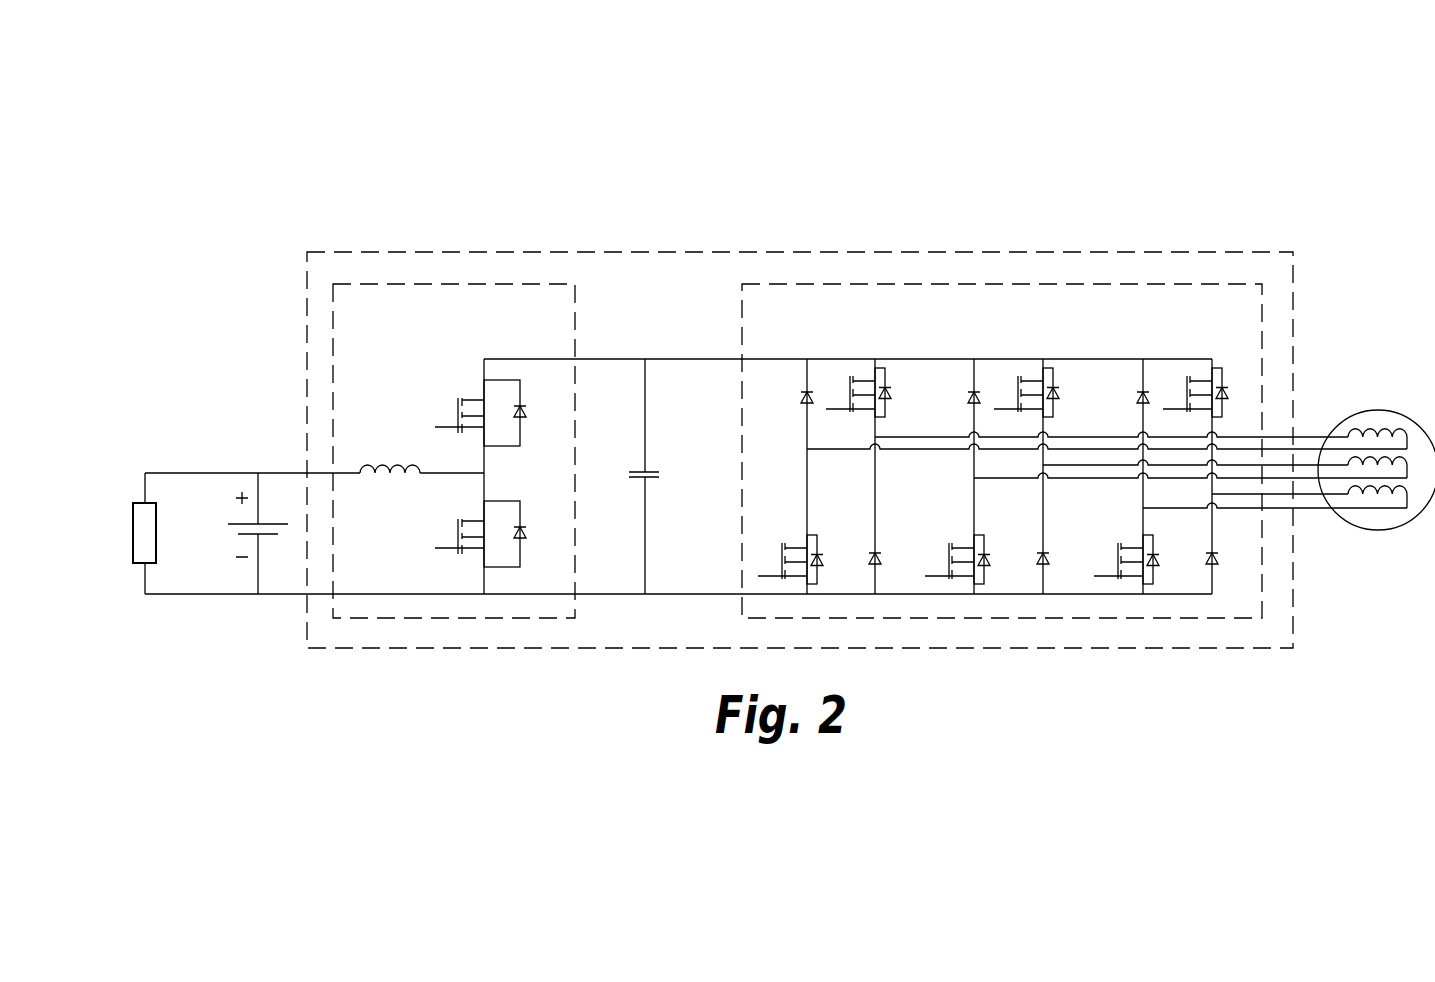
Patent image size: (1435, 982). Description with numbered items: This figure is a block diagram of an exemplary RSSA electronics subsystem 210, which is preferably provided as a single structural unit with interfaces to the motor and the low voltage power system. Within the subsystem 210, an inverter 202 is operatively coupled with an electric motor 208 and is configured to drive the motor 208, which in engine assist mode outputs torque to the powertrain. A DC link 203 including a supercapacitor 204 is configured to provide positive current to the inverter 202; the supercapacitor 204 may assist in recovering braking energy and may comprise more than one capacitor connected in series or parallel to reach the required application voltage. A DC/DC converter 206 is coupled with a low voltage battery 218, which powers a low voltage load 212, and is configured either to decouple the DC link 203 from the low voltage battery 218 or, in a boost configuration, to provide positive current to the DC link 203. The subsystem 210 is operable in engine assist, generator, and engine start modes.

The inverter 202 is at (836, 285).
The DC link 203 is at (645, 345).
The supercapacitor 204 is at (646, 480).
The DC/DC converter 206 is at (443, 283).
The electric motor 208 is at (1388, 530).
The RSSA electronics subsystem 210 is at (1030, 252).
The low voltage load 212 is at (133, 525).
The low voltage battery 218 is at (258, 473).